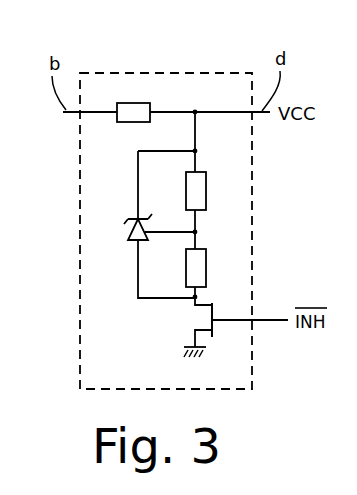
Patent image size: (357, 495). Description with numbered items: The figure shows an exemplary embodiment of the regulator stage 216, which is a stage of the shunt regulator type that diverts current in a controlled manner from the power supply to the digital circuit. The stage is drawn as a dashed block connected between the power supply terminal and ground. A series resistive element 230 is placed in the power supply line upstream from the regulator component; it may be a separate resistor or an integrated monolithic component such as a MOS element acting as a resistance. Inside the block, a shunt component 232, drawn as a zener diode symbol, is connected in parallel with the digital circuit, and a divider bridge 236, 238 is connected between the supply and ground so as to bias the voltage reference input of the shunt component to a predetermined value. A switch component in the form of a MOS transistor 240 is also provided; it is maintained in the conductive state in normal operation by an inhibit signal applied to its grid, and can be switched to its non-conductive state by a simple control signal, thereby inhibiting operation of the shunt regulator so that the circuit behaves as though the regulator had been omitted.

The regulator stage 216 is at (227, 73).
The series resistive element 230 is at (128, 103).
The zener diode 232 is at (128, 231).
The divider bridge resistor 236 is at (206, 183).
The divider bridge resistor 238 is at (207, 263).
The MOS transistor 240 is at (213, 305).